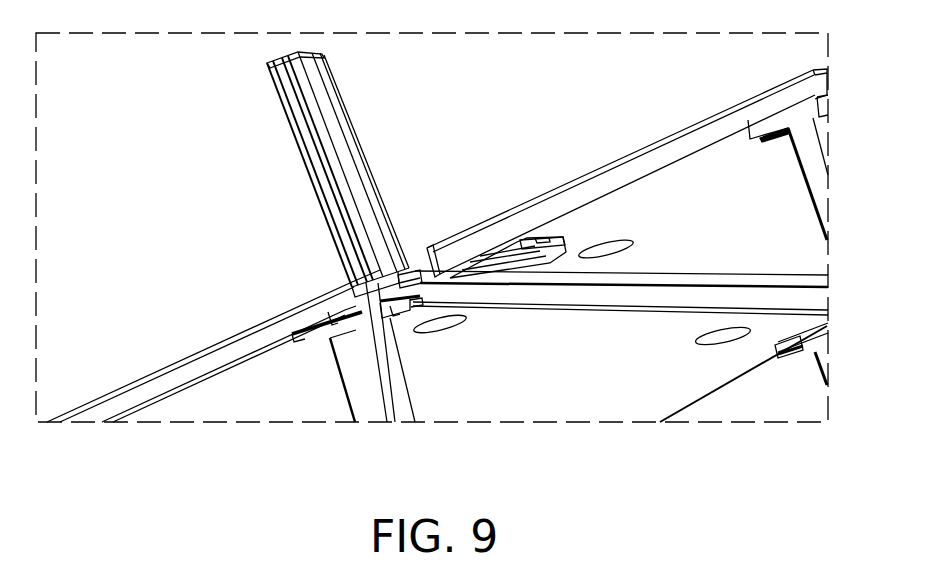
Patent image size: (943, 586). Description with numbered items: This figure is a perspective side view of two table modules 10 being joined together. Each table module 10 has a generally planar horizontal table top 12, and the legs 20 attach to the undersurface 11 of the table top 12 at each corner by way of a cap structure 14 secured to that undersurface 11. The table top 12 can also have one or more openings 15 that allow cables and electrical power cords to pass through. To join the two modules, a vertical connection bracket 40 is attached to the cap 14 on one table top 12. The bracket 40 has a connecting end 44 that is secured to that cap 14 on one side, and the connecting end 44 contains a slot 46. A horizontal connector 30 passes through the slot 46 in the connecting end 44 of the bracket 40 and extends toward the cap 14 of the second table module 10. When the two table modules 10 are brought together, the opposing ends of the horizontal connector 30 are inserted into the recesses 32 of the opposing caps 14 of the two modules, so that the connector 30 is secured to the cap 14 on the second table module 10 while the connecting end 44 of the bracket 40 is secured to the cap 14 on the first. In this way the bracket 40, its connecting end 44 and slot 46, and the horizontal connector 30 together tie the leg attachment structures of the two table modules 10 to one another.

The table module 10 is at (170, 255).
The undersurface 11 is at (628, 394).
The table top 12 is at (633, 165).
The cap structure 14 is at (300, 352).
The opening 15 is at (727, 338).
The leg 20 is at (357, 395).
The horizontal connector 30 is at (415, 312).
The recess 32 is at (307, 330).
The vertical connection bracket 40 is at (307, 140).
The connecting end 44 is at (413, 282).
The slot 46 is at (394, 330).